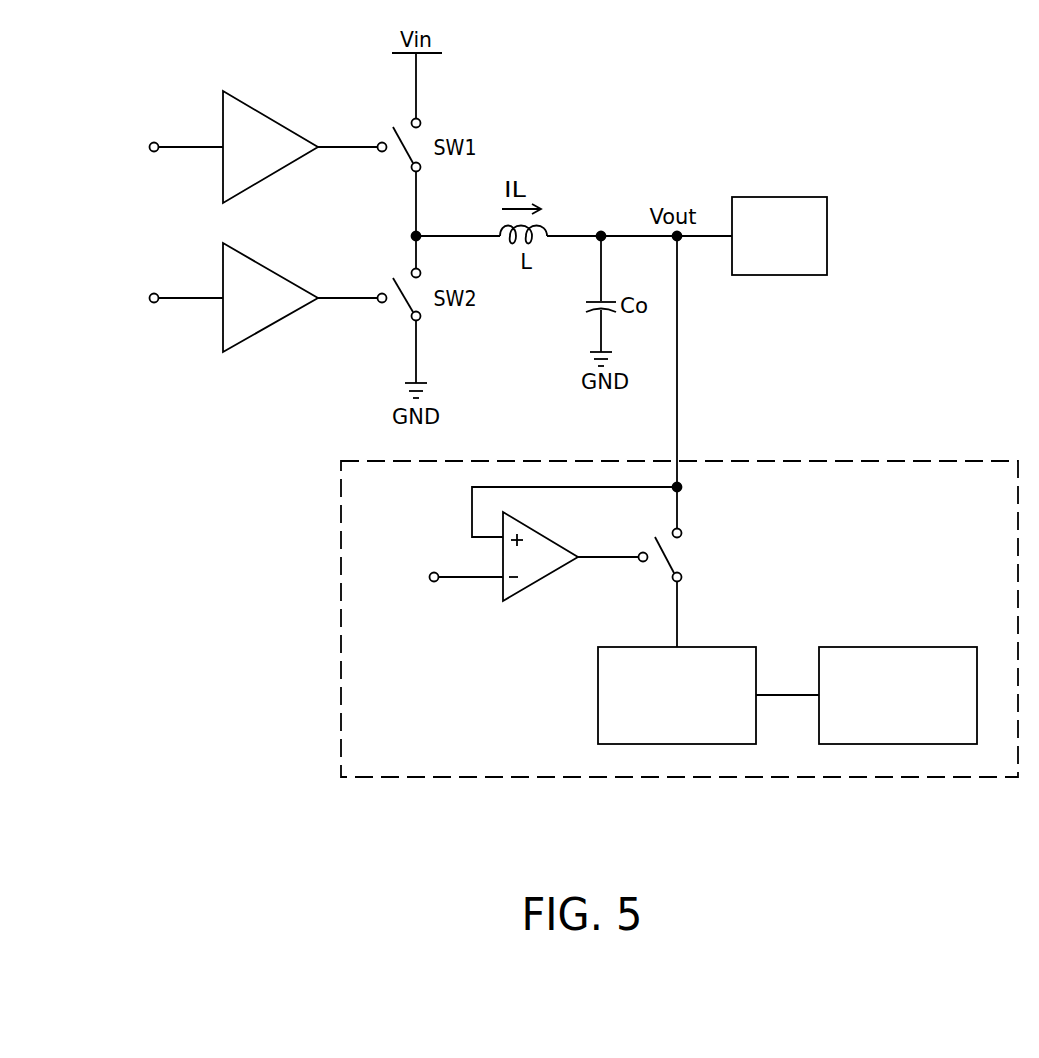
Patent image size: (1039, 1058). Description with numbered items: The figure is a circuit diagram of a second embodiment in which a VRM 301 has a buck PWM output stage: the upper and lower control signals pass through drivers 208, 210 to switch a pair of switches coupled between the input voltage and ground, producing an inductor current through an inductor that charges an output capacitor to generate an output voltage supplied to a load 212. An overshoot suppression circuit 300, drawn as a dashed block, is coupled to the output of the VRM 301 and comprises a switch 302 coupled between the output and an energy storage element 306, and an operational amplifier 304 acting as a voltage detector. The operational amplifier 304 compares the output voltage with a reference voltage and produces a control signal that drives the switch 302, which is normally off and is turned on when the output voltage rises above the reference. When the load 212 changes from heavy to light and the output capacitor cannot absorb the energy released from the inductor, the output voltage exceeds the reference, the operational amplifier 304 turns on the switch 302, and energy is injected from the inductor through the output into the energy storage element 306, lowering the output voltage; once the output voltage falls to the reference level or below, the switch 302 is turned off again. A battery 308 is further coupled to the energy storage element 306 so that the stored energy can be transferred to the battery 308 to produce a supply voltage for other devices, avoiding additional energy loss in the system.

The driver 208 is at (272, 117).
The driver 210 is at (272, 268).
The load 212 is at (778, 197).
The overshoot suppression circuit 300 is at (340, 567).
The VRM 301 is at (913, 98).
The switch 302 is at (693, 550).
The operational amplifier 304 is at (543, 578).
The energy storage element 306 is at (723, 647).
The battery 308 is at (895, 647).